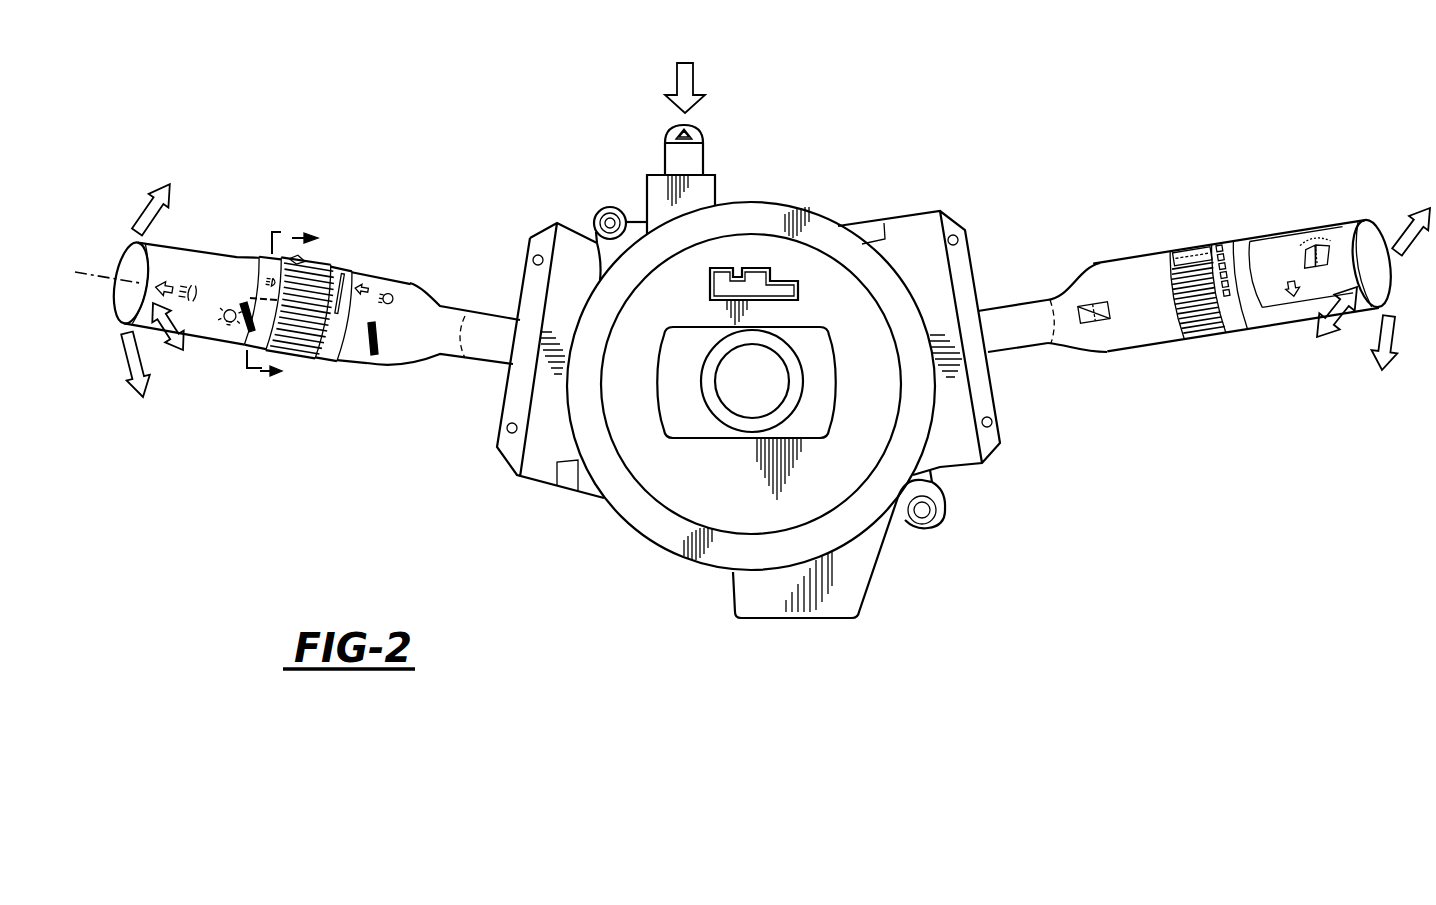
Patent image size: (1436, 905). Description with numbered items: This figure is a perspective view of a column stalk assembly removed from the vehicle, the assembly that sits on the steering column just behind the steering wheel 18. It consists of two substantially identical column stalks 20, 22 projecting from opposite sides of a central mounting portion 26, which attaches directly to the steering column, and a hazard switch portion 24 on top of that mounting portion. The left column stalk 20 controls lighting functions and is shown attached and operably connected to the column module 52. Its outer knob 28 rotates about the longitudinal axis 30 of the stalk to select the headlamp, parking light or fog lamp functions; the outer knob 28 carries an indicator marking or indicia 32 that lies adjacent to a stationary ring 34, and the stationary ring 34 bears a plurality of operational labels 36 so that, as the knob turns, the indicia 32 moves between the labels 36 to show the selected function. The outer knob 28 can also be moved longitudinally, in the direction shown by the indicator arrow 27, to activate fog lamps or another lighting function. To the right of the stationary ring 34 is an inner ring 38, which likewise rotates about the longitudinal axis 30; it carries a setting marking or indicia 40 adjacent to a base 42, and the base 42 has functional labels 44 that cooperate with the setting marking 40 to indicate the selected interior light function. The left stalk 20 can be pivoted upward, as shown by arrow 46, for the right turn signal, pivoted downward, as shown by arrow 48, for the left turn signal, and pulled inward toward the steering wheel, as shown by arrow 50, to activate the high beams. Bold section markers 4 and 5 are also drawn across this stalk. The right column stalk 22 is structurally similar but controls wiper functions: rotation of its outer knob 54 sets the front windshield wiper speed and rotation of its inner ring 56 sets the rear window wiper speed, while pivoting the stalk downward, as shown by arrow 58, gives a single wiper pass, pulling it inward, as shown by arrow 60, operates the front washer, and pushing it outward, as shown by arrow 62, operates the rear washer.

The steering wheel 18 is at (223, 256).
The column stalk 20 is at (338, 166).
The column stalk 22 is at (1094, 243).
The hazard switch portion 24 is at (726, 162).
The central mounting portion 26 is at (829, 236).
The indicator arrow 27 is at (168, 273).
The outer knob 28 is at (205, 257).
The longitudinal axis 30 is at (88, 268).
The indicator marking 32 is at (223, 328).
The stationary ring 34 is at (257, 342).
The operational labels 36 is at (273, 259).
The inner ring 38 is at (305, 346).
The setting marking 40 is at (314, 264).
The base 42 is at (437, 307).
The functional labels 44 is at (341, 338).
The arrow 46 is at (160, 178).
The arrow 48 is at (128, 392).
The arrow 50 is at (182, 353).
The column module 52 is at (567, 233).
The outer knob 54 is at (1368, 250).
The inner ring 56 is at (1192, 330).
The arrow 58 is at (1381, 367).
The arrow 60 is at (1333, 342).
The arrow 62 is at (1417, 212).
The section line 4- 4 is at (282, 305).
The section line 5- 5 is at (309, 317).